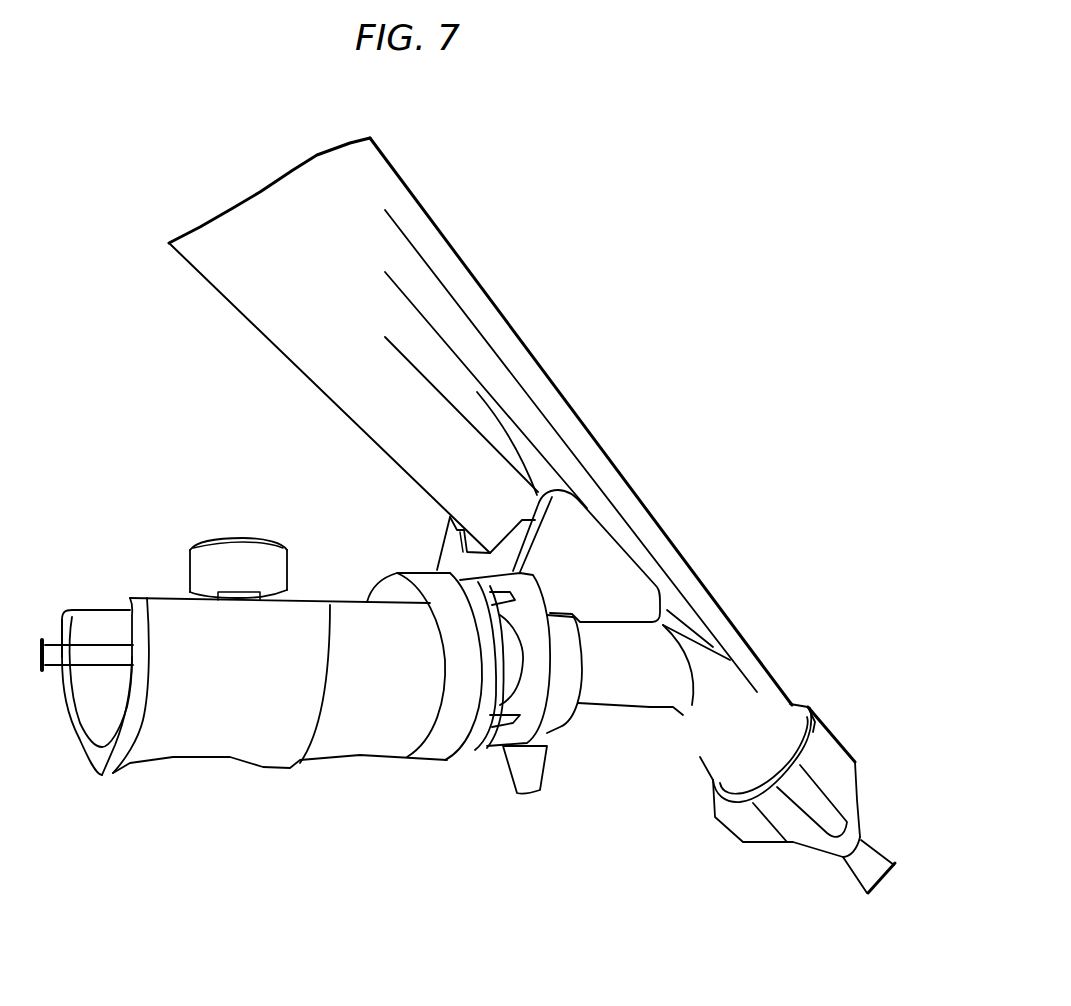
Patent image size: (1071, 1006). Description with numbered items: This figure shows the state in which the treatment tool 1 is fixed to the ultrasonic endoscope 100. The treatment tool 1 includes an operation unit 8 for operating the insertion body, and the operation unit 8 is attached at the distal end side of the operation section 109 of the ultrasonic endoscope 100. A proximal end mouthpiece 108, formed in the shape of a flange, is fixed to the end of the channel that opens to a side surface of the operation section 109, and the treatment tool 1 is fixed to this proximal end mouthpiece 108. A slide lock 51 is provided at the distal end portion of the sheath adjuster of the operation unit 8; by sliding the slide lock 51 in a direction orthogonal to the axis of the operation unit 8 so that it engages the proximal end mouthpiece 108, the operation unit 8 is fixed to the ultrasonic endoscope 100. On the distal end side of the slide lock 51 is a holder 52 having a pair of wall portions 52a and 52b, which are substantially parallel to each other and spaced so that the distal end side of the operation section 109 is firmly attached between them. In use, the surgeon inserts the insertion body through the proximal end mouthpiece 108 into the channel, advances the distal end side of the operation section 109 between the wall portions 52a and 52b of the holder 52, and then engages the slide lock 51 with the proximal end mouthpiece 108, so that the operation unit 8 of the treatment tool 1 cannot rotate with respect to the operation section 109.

The ultrasonic endoscope 100 is at (507, 228).
The operation section 109 is at (533, 358).
The proximal end mouthpiece 108 is at (560, 717).
The holder 52 is at (404, 556).
The wall portion 52a is at (450, 547).
The wall portion 52b is at (590, 563).
The slide lock 51 is at (503, 742).
The operation unit 8 is at (245, 796).
The treatment tool 1 is at (176, 787).